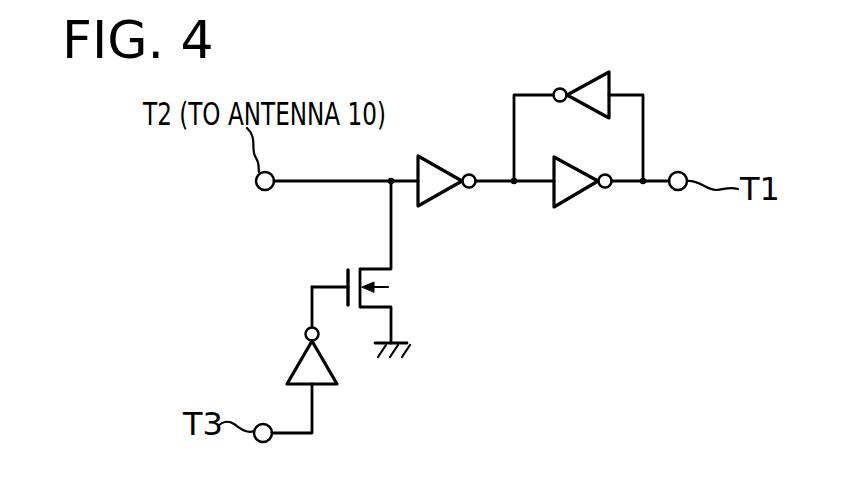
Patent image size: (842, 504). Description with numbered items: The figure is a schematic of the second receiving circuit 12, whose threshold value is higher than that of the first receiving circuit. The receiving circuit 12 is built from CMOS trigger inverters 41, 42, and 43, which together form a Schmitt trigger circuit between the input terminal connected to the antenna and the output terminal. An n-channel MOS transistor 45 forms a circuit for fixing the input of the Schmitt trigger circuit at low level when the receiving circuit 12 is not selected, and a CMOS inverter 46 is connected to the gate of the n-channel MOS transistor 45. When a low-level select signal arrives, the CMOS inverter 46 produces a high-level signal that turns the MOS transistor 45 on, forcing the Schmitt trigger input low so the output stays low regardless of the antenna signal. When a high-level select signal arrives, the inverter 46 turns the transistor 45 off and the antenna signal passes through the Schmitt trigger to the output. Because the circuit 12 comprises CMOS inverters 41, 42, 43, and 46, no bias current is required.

The second receiving circuit 12 is at (626, 139).
The CMOS trigger inverter 41 is at (577, 88).
The CMOS trigger inverter 42 is at (574, 198).
The CMOS trigger inverter 43 is at (449, 168).
The n-channel MOS transistor 45 is at (388, 287).
The CMOS inverter 46 is at (295, 368).